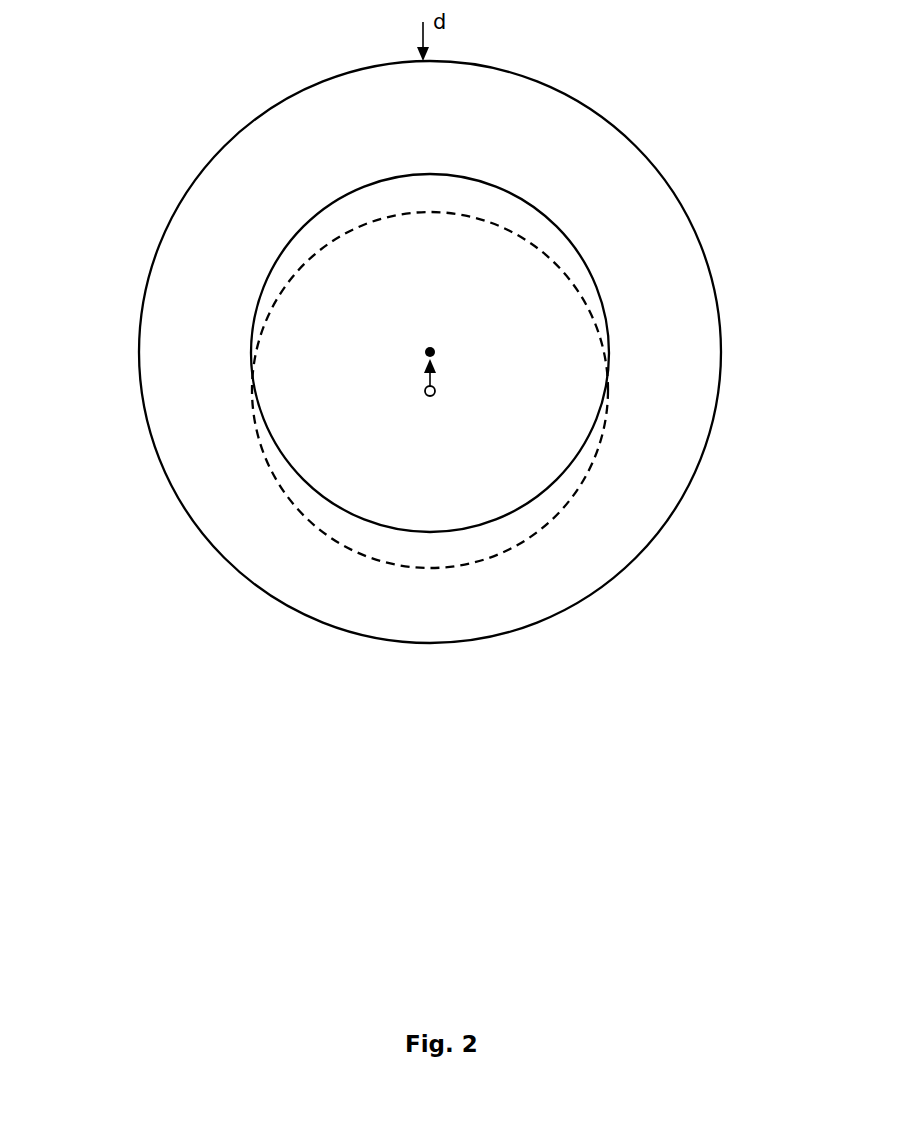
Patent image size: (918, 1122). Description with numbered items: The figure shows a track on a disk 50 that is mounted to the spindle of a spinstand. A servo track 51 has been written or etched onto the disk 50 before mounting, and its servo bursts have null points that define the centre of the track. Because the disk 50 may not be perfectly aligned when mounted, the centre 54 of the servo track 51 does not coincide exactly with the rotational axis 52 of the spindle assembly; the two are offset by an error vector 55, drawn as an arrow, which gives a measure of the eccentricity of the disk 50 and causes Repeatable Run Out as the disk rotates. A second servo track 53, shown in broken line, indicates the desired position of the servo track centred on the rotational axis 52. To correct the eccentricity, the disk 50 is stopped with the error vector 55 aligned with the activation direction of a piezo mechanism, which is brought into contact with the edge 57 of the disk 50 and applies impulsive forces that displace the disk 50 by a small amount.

The disk 50 is at (289, 572).
The servo track 51 is at (560, 205).
The rotational axis 52 is at (437, 388).
The servo track (desired position) 53 is at (540, 533).
The centre of the servo track 54 is at (436, 350).
The error vector 55 is at (415, 381).
The edge of the disk 57 is at (420, 646).